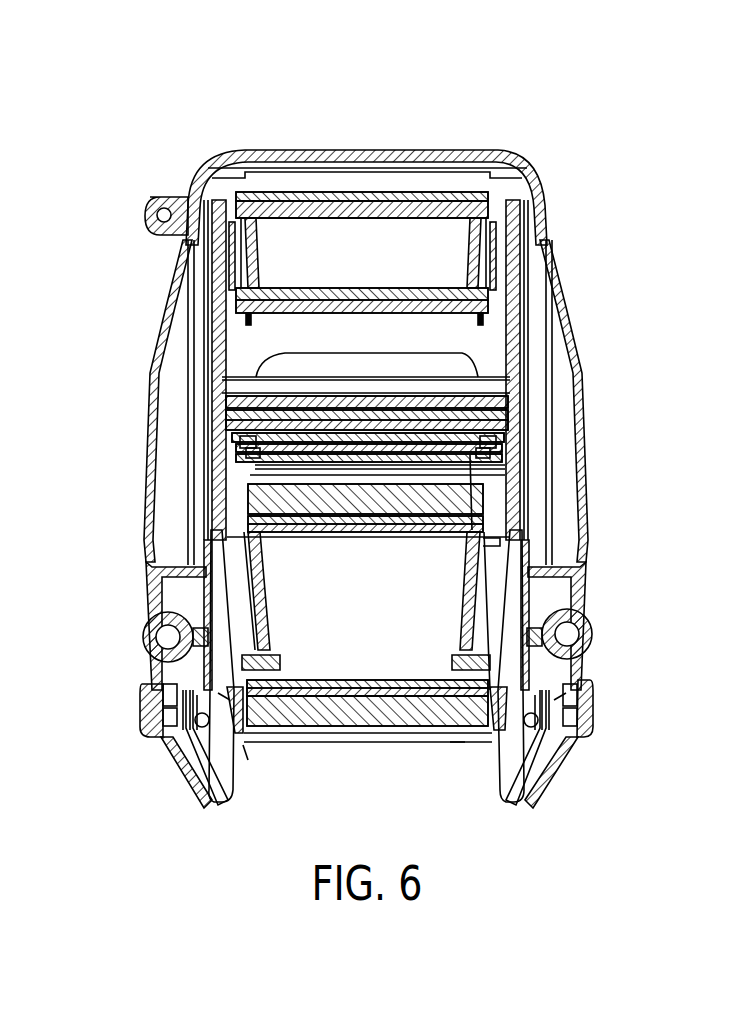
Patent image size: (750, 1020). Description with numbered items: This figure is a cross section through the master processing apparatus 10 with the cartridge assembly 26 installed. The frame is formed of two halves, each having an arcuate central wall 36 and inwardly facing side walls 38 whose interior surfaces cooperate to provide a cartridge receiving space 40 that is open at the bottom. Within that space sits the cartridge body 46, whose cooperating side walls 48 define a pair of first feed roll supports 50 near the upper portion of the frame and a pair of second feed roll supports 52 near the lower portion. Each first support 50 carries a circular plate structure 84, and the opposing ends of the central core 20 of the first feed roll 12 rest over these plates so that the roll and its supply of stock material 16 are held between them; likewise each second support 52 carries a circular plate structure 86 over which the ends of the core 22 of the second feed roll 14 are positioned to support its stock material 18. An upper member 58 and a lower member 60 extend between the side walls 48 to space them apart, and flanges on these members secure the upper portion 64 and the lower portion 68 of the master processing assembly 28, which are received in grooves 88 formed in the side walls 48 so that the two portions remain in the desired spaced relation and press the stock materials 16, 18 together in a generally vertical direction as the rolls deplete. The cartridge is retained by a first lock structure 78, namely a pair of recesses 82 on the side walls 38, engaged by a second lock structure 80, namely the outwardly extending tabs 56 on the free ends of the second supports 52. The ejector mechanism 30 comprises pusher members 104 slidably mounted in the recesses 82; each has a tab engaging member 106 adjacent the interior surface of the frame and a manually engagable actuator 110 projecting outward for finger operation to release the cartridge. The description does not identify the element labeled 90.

The master processing apparatus 10 is at (372, 376).
The first feed roll 12 is at (376, 192).
The second feed roll 14 is at (306, 732).
The stock material 16 is at (412, 192).
The stock material 18 is at (345, 735).
The central core 20 is at (450, 192).
The central core 22 is at (397, 700).
The cartridge assembly 26 is at (244, 753).
The master processing assembly 28 is at (462, 366).
The ejector mechanism 30 is at (585, 730).
The arcuate central wall 36 is at (335, 148).
The side walls 38 is at (592, 540).
The cartridge receiving space 40 is at (457, 753).
The cartridge body 46 is at (480, 538).
The side walls 48 is at (212, 400).
The first feed roll supports 50 is at (512, 257).
The second feed roll supports 52 is at (467, 605).
The outwardly extending tab 56 is at (505, 802).
The upper member 58 is at (500, 380).
The lower member 60 is at (472, 455).
The upper portion 64 is at (512, 406).
The lower portion 68 is at (515, 440).
The first lock structure 78 is at (225, 690).
The second lock structure 80 is at (487, 735).
The recesses 82 is at (548, 782).
The circular plate structure 84 is at (468, 235).
The circular plate structure 86 is at (455, 652).
The grooves 88 is at (505, 450).
The web 90 is at (322, 440).
The pusher members 104 is at (593, 700).
The tab engaging member 106 is at (566, 762).
The manually engagable actuator 110 is at (585, 712).